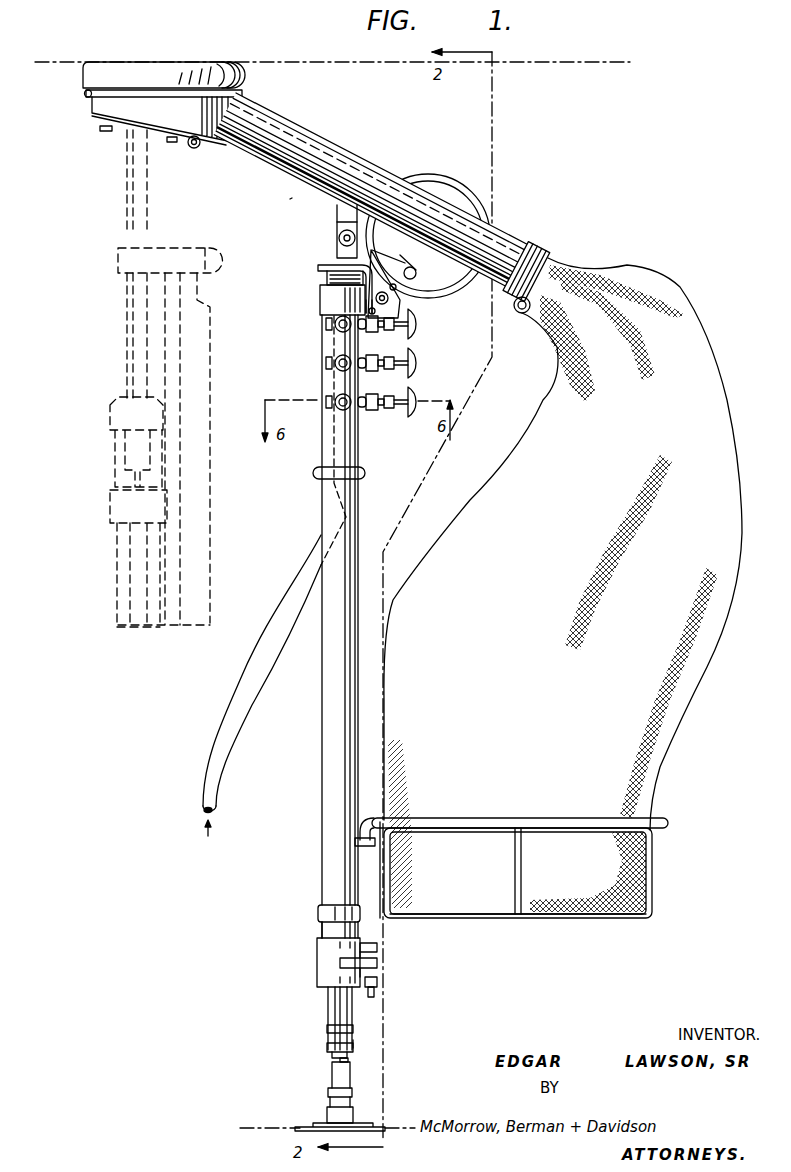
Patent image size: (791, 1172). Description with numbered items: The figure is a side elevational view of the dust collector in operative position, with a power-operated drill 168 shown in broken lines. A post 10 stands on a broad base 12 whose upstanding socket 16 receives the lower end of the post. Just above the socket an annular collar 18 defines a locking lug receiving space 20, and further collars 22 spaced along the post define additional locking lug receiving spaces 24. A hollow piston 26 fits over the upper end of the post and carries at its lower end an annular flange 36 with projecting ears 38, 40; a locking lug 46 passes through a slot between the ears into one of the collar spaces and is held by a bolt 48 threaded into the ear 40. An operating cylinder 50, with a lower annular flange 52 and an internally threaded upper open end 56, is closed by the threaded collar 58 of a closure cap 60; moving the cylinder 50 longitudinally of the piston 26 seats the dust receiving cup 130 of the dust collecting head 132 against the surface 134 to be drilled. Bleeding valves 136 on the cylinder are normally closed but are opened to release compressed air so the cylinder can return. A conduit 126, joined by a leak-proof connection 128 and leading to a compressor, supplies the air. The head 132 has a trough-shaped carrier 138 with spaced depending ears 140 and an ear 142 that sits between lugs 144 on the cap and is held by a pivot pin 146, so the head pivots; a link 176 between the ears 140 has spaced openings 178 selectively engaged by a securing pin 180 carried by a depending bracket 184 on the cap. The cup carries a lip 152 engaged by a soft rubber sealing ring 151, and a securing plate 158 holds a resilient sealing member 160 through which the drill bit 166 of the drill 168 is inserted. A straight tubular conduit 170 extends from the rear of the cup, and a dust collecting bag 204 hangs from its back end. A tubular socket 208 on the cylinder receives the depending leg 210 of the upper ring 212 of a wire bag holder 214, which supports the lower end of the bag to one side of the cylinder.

The post 10 is at (333, 1004).
The base 12 is at (362, 1125).
The socket 16 is at (327, 1114).
The collar 18 is at (331, 1081).
The locking lug receiving space 20 is at (328, 1101).
The collars 22 is at (330, 1046).
The locking lug receiving spaces 24 is at (356, 1042).
The piston 26 is at (324, 930).
The annular flange 36 is at (317, 972).
The ear 38 is at (378, 950).
The ear 40 is at (378, 984).
The locking lug 46 is at (378, 966).
The bolt 48 is at (374, 994).
The cylinder 50 is at (321, 779).
The annular flange 52 is at (318, 917).
The upper open end 56 is at (320, 303).
The collar 58 is at (328, 280).
The closure cap 60 is at (318, 268).
The conduit 126 is at (232, 680).
The leak-proof connection 128 is at (318, 474).
The dust receiving cup 130 is at (90, 106).
The dust collecting head 132 is at (381, 195).
The surface to be drilled 134 is at (64, 45).
The bleeding valves 136 is at (335, 328).
The carrier 138 is at (292, 198).
The ears 140 is at (417, 273).
The ear 142 is at (336, 222).
The lugs 144 is at (336, 252).
The pivot pin 146 is at (338, 240).
The sealing ring 151 is at (243, 77).
The lip 152 is at (86, 93).
The securing plate 158 is at (100, 128).
The sealing member 160 is at (190, 146).
The drill bit 166 is at (127, 178).
The power-operated drill 168 is at (110, 497).
The tubular conduit 170 is at (420, 195).
The link 176 is at (422, 300).
The openings 178 is at (398, 308).
The securing pin 180 is at (394, 325).
The bracket 184 is at (378, 284).
The dust collecting bag 204 is at (600, 493).
The socket 208 is at (384, 918).
The leg 210 is at (358, 826).
The upper ring 212 is at (668, 825).
The bag holder 214 is at (652, 917).